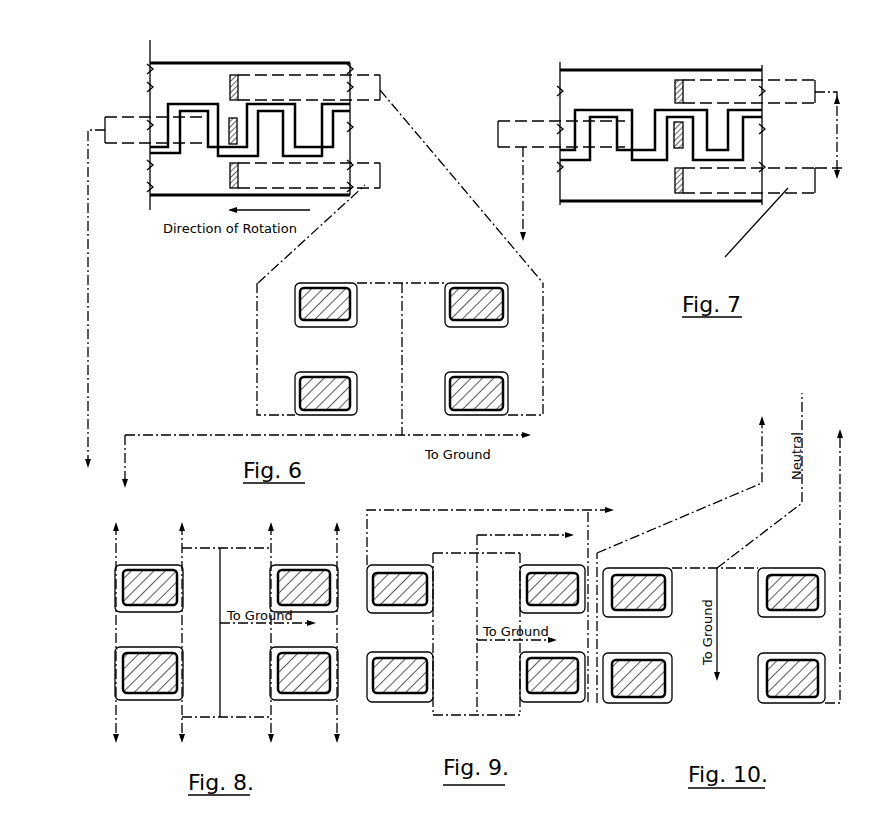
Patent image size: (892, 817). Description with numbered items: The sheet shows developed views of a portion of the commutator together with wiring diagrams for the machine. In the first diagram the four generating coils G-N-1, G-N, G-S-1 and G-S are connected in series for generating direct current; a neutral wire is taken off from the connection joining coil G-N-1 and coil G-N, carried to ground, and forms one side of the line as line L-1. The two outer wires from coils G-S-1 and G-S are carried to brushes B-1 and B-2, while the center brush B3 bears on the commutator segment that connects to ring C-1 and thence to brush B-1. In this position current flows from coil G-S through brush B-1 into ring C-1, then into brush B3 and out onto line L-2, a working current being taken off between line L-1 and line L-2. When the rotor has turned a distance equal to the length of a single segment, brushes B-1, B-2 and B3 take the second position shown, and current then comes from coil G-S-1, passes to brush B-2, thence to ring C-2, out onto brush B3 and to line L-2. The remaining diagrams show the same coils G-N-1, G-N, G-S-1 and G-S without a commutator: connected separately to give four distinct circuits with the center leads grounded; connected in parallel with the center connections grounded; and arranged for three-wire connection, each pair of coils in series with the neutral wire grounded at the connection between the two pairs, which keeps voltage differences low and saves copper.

In FIG. 6, the ring C-1 is at (218, 109).
In FIG. 7, the ring C-1 is at (662, 114).
In FIG. 6, the ring C-2 is at (218, 175).
In FIG. 7, the ring C-2 is at (662, 180).
In FIG. 6, the brush B-1 is at (362, 76).
In FIG. 7, the brush B-1 is at (777, 81).
In FIG. 6, the brush B-2 is at (364, 186).
In FIG. 7, the brush B-2 is at (768, 190).
In FIG. 6, the center brush B3 is at (130, 130).
In FIG. 7, the center brush B3 is at (556, 125).
In FIG. 6, the generating coil G-N-1 is at (326, 296).
In FIG. 8, the generating coil G-N-1 is at (149, 581).
In FIG. 9, the generating coil G-N-1 is at (400, 582).
In FIG. 10, the generating coil G-N-1 is at (637, 585).
In FIG. 6, the generating coil G-N is at (476, 296).
In FIG. 8, the generating coil G-N is at (304, 581).
In FIG. 9, the generating coil G-N is at (552, 582).
In FIG. 10, the generating coil G-N is at (791, 585).
In FIG. 6, the generating coil G-S-1 is at (326, 385).
In FIG. 7, the generating coil G-S-1 is at (731, 234).
In FIG. 8, the generating coil G-S-1 is at (149, 666).
In FIG. 9, the generating coil G-S-1 is at (400, 669).
In FIG. 10, the generating coil G-S-1 is at (637, 670).
In FIG. 6, the generating coil G-S is at (476, 385).
In FIG. 7, the generating coil G-S is at (828, 135).
In FIG. 8, the generating coil G-S is at (304, 666).
In FIG. 9, the generating coil G-S is at (552, 671).
In FIG. 10, the generating coil G-S is at (791, 670).
In FIG. 6, the line L-1 is at (119, 420).
In FIG. 9, the line L-1 is at (525, 529).
In FIG. 10, the line L-1 is at (834, 566).
In FIG. 6, the line L-2 is at (88, 299).
In FIG. 7, the line L-2 is at (517, 194).
In FIG. 9, the line L-2 is at (490, 530).
In FIG. 10, the line L-2 is at (681, 477).